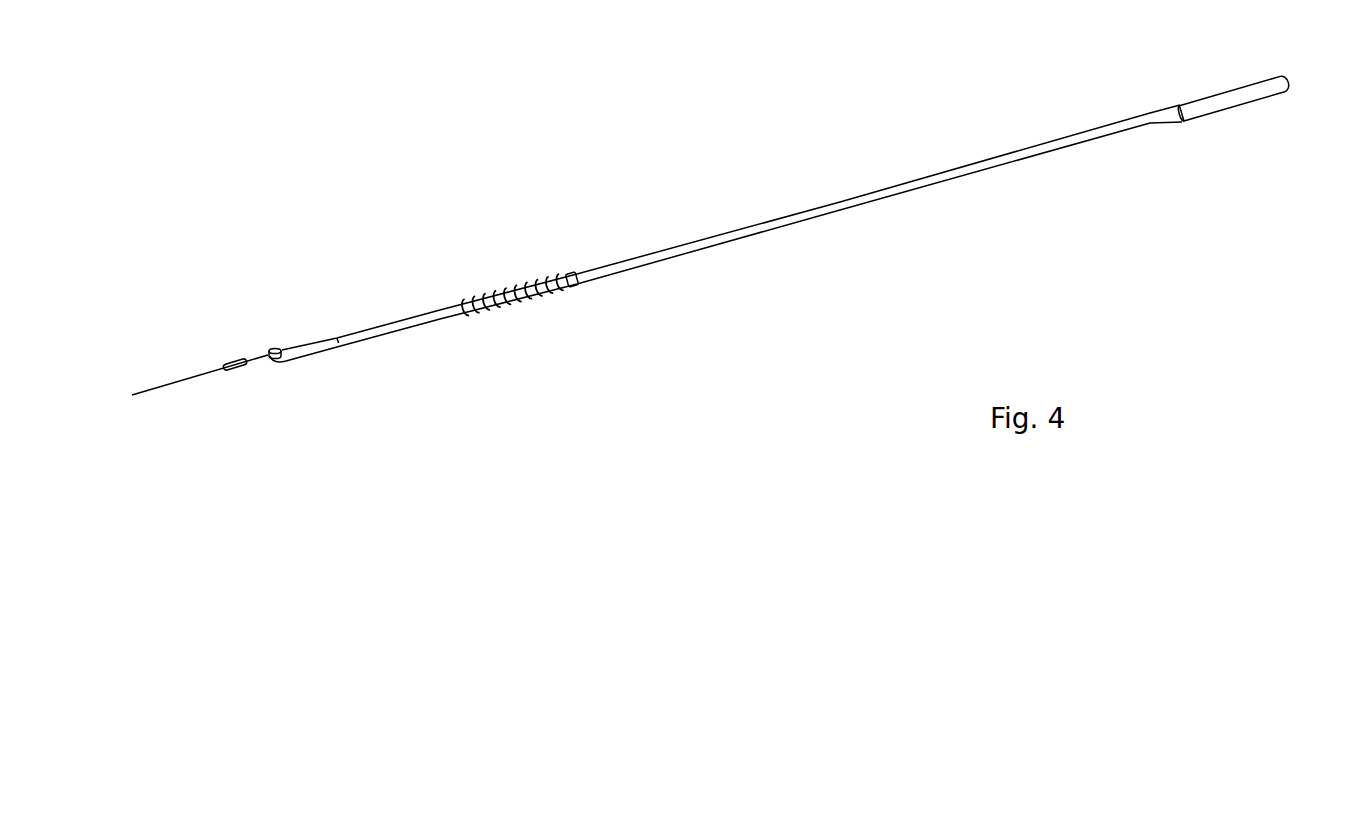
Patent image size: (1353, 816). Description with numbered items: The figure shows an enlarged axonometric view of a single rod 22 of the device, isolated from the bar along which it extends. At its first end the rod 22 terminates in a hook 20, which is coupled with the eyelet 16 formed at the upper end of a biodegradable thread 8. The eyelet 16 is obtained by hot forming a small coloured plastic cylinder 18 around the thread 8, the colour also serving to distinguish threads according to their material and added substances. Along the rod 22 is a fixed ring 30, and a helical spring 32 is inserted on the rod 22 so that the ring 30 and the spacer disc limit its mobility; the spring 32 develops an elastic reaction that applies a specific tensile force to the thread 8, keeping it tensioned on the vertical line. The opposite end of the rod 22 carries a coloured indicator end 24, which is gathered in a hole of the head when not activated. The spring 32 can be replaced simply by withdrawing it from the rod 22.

The biodegradable thread 8 is at (197, 372).
The eyelet 16 is at (262, 358).
The small coloured plastic cylinder 18 is at (232, 369).
The hook 20 is at (305, 355).
The rod 22 is at (880, 193).
The coloured indicator end 24 is at (1232, 98).
The fixed ring 30 is at (573, 285).
The helical spring 32 is at (483, 308).